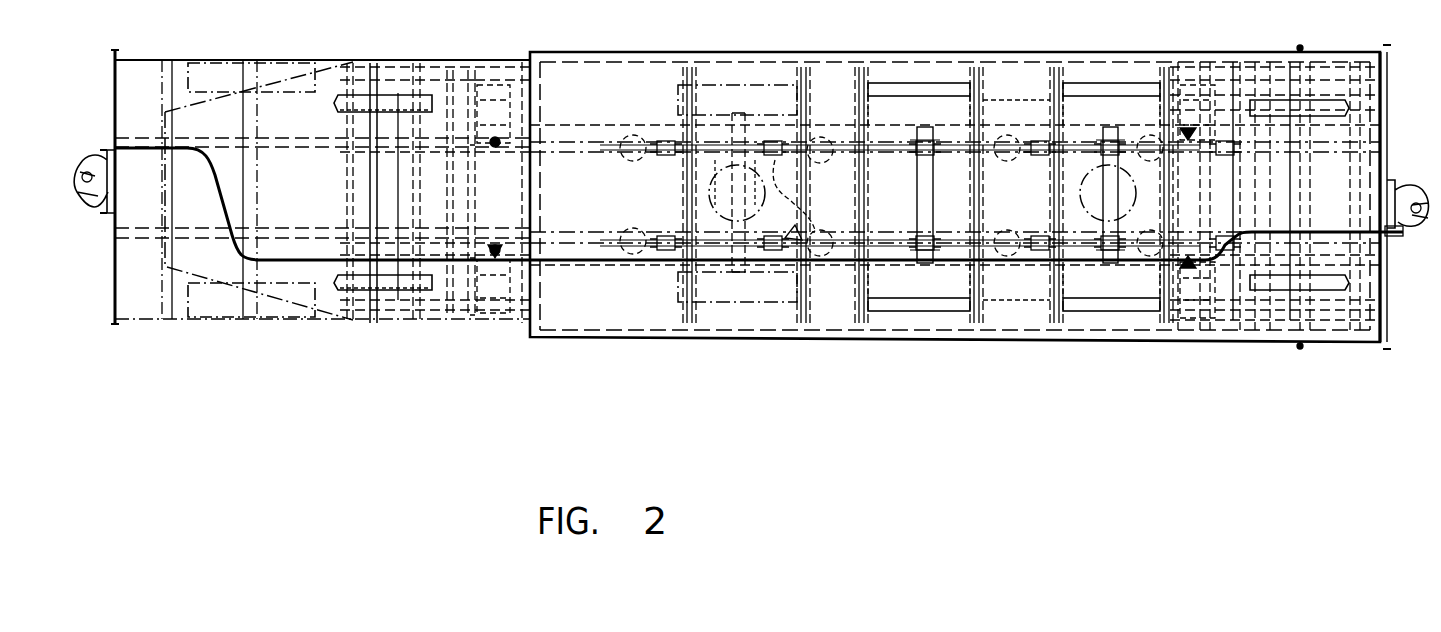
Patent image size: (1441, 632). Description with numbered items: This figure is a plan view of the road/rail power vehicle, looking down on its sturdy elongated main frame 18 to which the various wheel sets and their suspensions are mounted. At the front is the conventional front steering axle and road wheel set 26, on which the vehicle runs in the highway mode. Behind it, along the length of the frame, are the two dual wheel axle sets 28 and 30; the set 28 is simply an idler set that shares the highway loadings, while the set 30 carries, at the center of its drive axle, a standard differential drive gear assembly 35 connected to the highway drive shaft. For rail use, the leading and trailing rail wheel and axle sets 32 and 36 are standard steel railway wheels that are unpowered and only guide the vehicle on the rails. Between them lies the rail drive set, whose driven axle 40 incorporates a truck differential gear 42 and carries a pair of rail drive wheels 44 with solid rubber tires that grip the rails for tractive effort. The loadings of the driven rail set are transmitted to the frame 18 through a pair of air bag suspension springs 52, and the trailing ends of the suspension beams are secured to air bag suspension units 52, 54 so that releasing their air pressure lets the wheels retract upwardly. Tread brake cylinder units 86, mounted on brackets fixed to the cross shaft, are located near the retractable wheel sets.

The main frame 18 is at (578, 237).
The front steering axle and road wheel set 26 is at (187, 300).
The dual wheel axle set 28 is at (858, 310).
The dual wheel axle set 30 is at (1048, 305).
The rail wheel and axle set 32 is at (336, 282).
The differential drive gear assembly 35 is at (1127, 203).
The rail wheel and axle set 36 is at (1353, 300).
The driven axle 40 is at (740, 228).
The truck differential gear 42 is at (735, 195).
The rail drive wheels 44 is at (715, 100).
The air bag suspension springs 52 is at (790, 235).
The air bag suspension units 54 is at (958, 233).
The tread brake cylinder units 86 is at (500, 280).